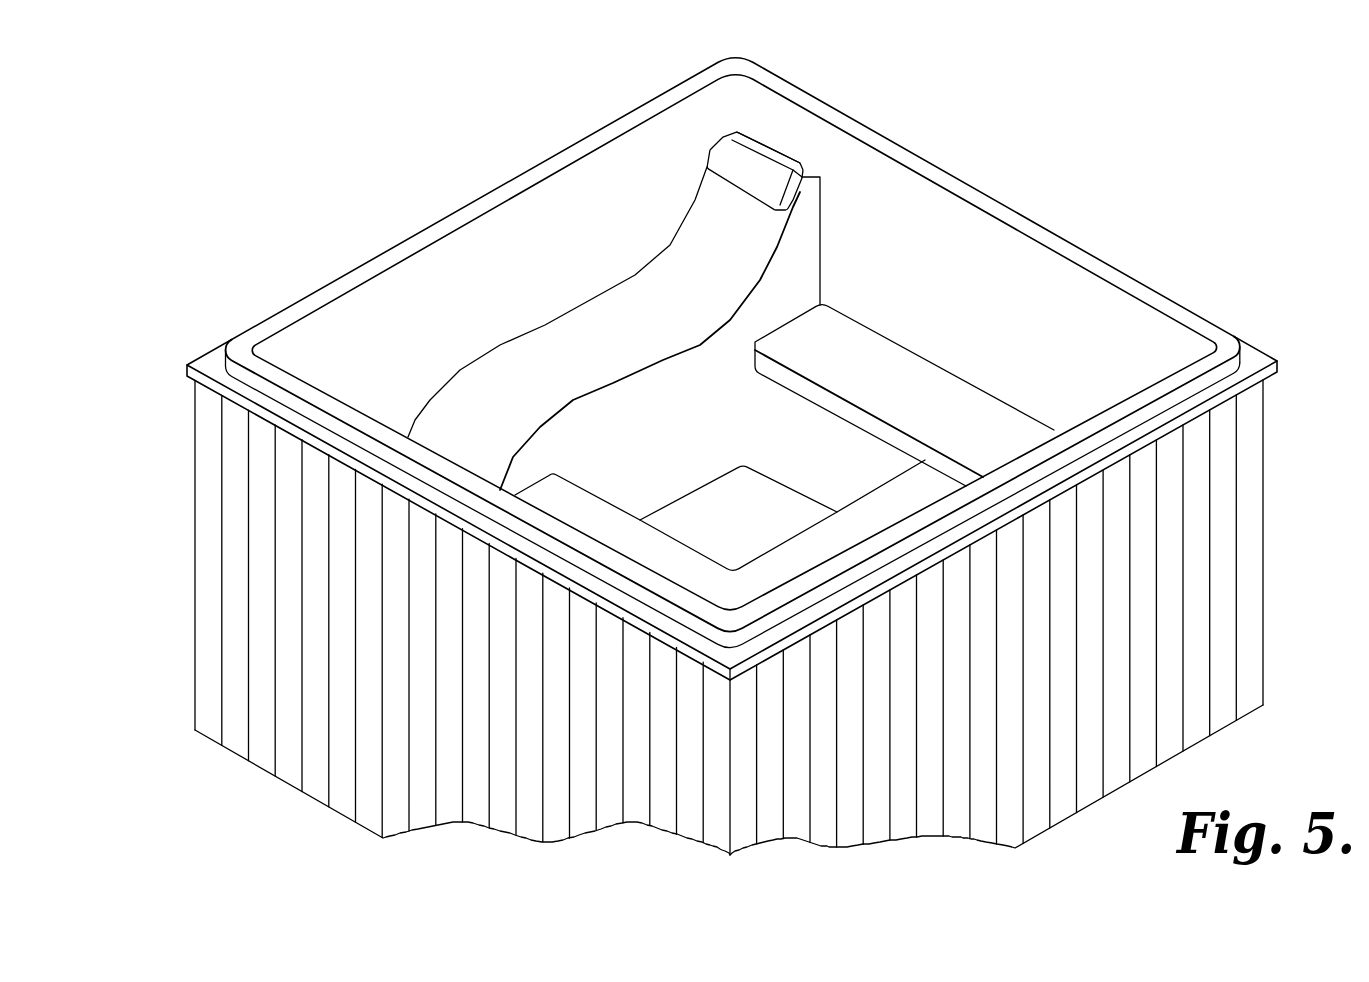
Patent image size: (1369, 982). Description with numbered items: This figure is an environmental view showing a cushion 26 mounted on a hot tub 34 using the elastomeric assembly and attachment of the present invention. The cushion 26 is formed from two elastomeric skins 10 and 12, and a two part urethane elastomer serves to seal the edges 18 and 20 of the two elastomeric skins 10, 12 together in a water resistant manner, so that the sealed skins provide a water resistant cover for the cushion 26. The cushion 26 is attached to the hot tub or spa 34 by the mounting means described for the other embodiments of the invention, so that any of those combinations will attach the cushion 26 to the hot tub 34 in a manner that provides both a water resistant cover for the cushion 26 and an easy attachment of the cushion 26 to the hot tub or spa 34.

The elastomeric skin 10 is at (837, 203).
The elastomeric skin 12 is at (718, 162).
The edge 18 is at (760, 140).
The edge 20 is at (732, 140).
The cushion 26 is at (795, 165).
The hot tub 34 is at (1157, 210).